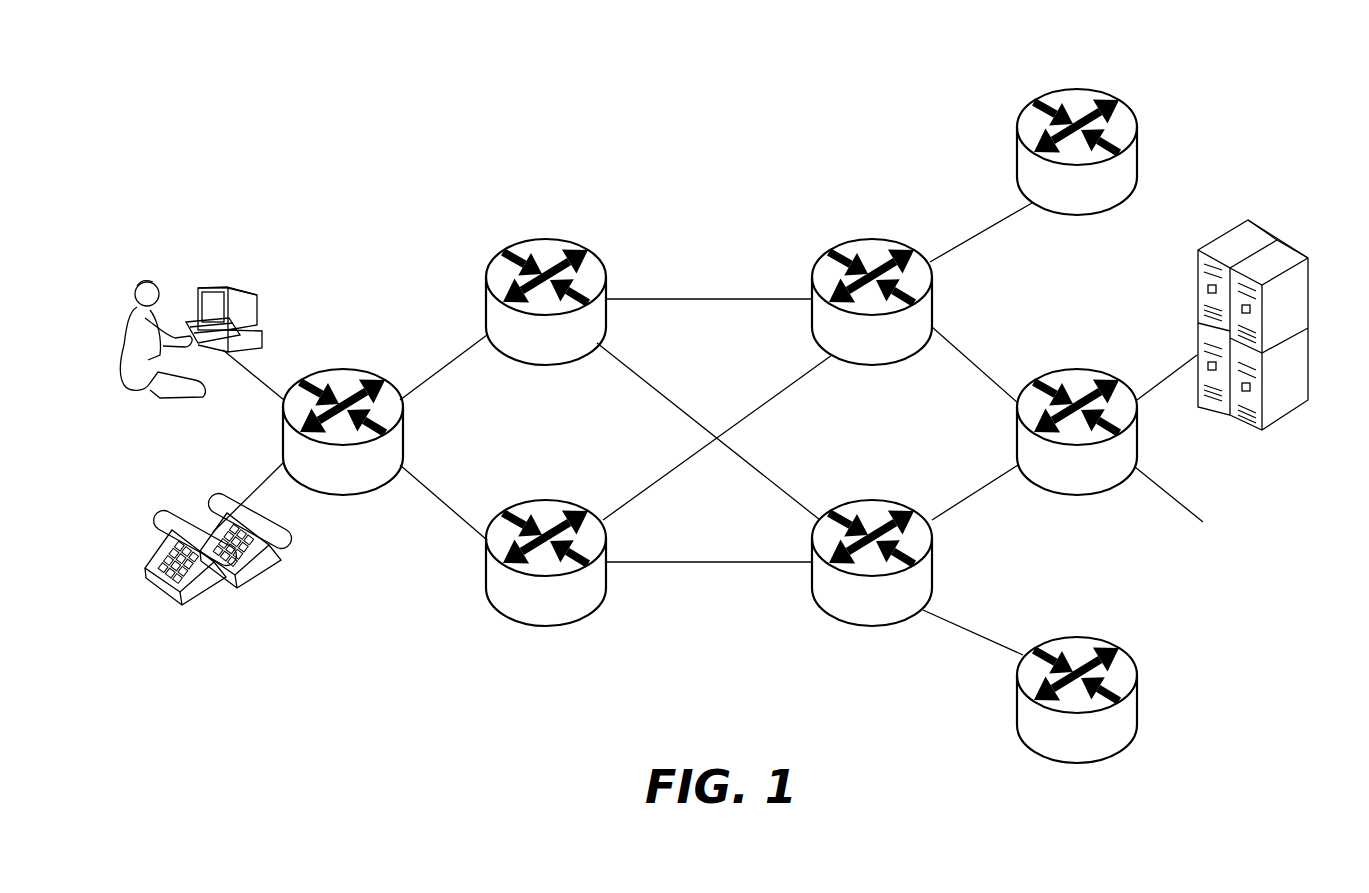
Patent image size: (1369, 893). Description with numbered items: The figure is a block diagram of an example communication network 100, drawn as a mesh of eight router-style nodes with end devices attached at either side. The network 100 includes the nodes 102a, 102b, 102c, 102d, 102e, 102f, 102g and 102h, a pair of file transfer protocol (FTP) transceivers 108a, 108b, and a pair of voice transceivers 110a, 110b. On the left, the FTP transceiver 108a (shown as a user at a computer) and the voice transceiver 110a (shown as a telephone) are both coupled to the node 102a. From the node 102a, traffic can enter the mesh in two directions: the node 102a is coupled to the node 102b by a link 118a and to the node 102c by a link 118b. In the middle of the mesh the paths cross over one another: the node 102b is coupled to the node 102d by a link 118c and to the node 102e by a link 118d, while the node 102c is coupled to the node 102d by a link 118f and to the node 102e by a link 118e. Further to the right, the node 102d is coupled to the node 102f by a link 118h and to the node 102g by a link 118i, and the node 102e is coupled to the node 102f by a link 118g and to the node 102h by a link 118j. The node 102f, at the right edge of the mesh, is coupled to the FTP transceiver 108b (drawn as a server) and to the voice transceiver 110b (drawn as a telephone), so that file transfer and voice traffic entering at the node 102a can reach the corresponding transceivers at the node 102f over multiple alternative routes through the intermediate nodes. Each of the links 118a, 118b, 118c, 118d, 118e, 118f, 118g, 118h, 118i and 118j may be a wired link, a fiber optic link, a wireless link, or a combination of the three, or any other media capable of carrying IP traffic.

The communication network 100 is at (686, 80).
The node 102a is at (343, 369).
The node 102b is at (546, 239).
The node 102c is at (546, 500).
The node 102d is at (872, 239).
The node 102e is at (872, 500).
The node 102f is at (1077, 369).
The node 102g is at (1077, 89).
The node 102h is at (1077, 637).
The file transfer protocol (FTP) transceiver 108a is at (228, 290).
The file transfer protocol (FTP) transceiver 108b is at (1258, 221).
The voice transceiver 110a is at (207, 588).
The voice transceiver 110b is at (1257, 508).
The link 118a is at (437, 394).
The link 118b is at (433, 490).
The link 118c is at (650, 298).
The link 118d is at (647, 383).
The link 118e is at (650, 562).
The link 118f is at (800, 380).
The link 118g is at (983, 490).
The link 118h is at (985, 375).
The link 118i is at (985, 231).
The link 118j is at (975, 635).